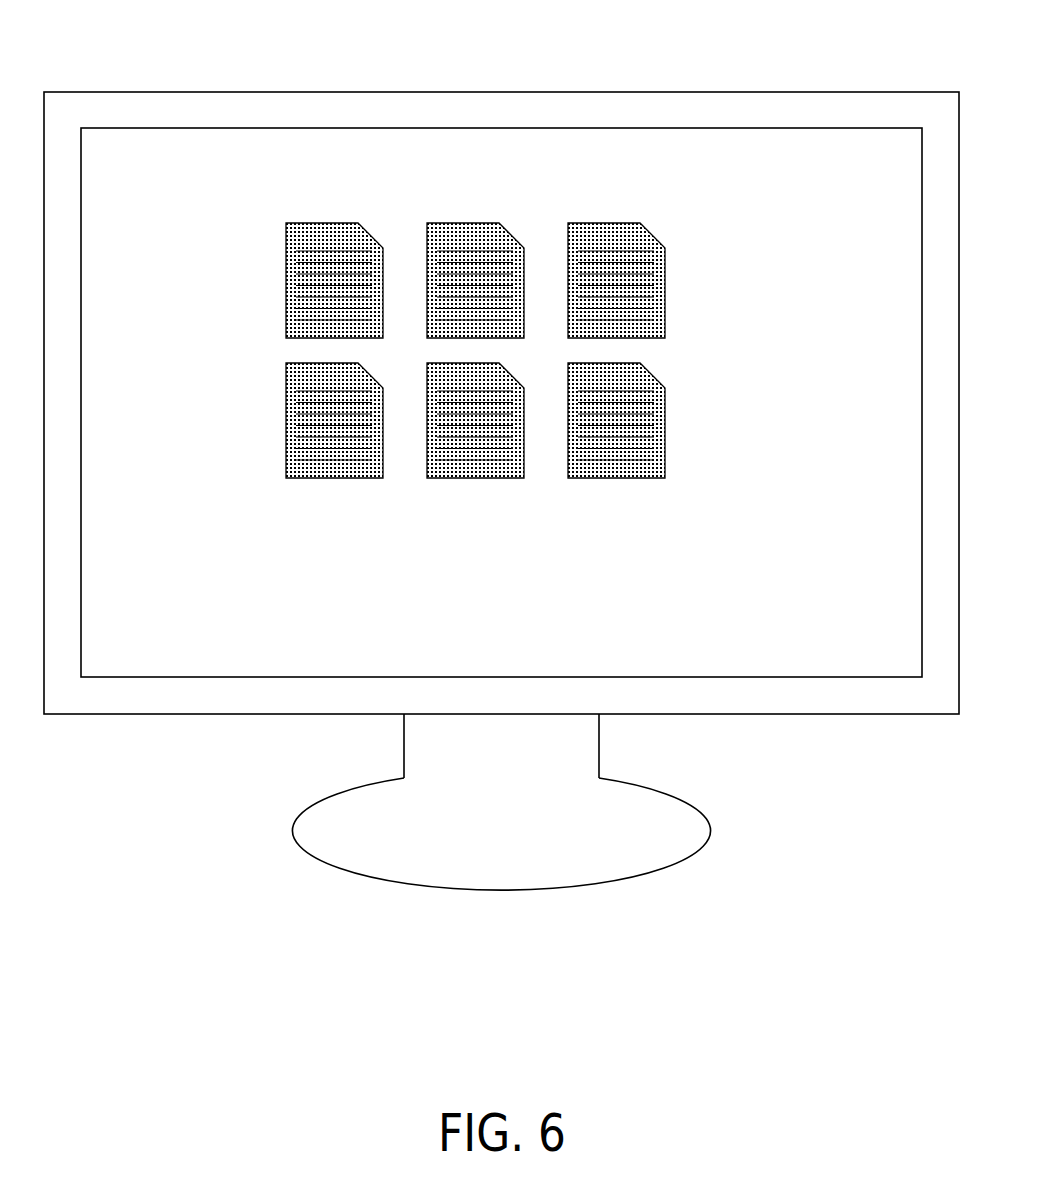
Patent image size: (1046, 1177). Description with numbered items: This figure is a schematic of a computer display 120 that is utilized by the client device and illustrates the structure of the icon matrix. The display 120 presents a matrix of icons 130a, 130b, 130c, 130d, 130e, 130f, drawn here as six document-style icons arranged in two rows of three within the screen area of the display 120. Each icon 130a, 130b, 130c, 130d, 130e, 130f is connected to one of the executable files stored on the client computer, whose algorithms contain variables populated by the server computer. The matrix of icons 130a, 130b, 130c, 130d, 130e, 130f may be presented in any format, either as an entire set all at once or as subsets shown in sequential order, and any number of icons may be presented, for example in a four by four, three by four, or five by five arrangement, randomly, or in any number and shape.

The display 120 is at (743, 91).
The icon 130a is at (286, 247).
The icon 130b is at (427, 247).
The icon 130c is at (568, 249).
The icon 130d is at (286, 463).
The icon 130e is at (437, 479).
The icon 130f is at (573, 479).